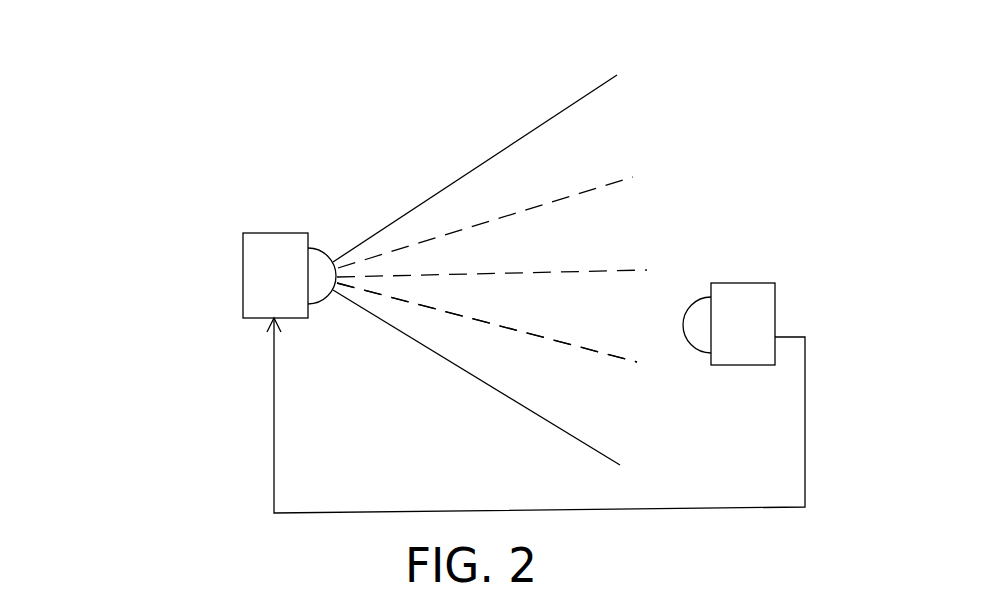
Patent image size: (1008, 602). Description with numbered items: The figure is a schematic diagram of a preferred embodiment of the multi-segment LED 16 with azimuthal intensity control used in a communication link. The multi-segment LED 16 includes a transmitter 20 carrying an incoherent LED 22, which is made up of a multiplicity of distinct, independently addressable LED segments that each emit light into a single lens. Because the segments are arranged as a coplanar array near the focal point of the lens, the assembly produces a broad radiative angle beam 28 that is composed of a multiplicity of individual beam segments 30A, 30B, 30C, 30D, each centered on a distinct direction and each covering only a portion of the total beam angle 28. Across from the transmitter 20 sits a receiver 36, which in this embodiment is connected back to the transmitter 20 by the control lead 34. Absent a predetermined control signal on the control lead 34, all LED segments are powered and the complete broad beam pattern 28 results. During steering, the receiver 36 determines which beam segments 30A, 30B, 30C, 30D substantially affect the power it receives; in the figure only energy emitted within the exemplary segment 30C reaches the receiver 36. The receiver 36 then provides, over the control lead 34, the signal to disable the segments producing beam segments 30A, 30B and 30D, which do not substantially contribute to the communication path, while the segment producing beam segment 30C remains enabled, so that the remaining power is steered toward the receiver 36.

The multi-segment LED 16 is at (165, 381).
The transmitter 20 is at (258, 233).
The incoherent LED 22 is at (325, 298).
The radiative angle beam 28 is at (438, 192).
The beam segment 30A is at (506, 197).
The beam segment 30B is at (506, 240).
The beam segment 30C is at (507, 322).
The beam segment 30D is at (507, 351).
The control lead 34 is at (303, 513).
The receiver 36 is at (750, 283).